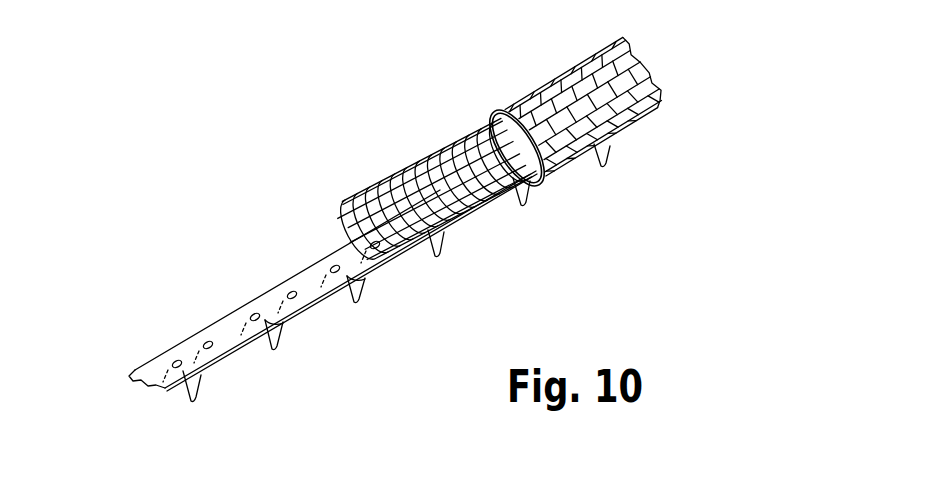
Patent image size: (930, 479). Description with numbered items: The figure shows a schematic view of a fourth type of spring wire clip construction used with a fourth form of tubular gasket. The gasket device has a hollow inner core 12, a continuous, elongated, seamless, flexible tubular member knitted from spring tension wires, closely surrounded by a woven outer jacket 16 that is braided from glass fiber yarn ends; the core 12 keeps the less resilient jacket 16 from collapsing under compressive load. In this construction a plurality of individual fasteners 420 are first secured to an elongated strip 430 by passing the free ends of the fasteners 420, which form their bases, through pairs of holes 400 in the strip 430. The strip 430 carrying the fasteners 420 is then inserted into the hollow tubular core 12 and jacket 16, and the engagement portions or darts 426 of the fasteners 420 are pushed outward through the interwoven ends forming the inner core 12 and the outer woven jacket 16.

The core 12 is at (415, 163).
The woven outer jacket 16 is at (630, 127).
The holes 400 is at (207, 342).
The fasteners 420 is at (595, 165).
The darts 426 is at (345, 288).
The strip 430 is at (150, 365).